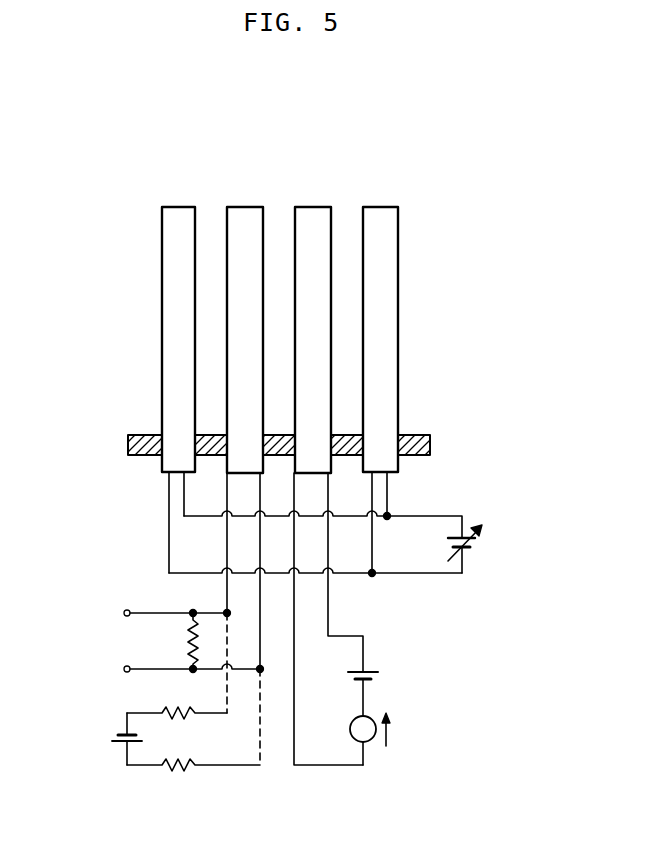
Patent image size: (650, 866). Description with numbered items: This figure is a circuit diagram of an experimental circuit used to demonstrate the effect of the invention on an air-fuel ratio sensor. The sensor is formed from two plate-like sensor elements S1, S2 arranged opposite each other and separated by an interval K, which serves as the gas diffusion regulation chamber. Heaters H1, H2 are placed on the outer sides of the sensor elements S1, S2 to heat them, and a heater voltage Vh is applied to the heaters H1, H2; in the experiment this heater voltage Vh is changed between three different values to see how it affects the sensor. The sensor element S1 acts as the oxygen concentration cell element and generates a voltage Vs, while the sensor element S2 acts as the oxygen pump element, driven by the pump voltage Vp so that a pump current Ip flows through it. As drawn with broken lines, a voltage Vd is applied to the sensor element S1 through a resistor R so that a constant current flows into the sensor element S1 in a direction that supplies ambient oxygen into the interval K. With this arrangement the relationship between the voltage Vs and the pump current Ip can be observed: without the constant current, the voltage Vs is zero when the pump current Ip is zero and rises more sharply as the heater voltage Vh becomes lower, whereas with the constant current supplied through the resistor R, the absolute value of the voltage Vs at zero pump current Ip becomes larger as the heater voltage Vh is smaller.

The heater H1 is at (176, 217).
The sensor element S1 is at (240, 218).
The interval K is at (280, 228).
The sensor element S2 is at (315, 218).
The heater H2 is at (378, 218).
The heater voltage Vh is at (477, 543).
The voltage generated at the sensor element S1 Vs is at (169, 639).
The voltage Vd is at (107, 739).
The resistor R is at (193, 751).
The pump voltage Vp is at (376, 690).
The pump current Ip is at (381, 739).